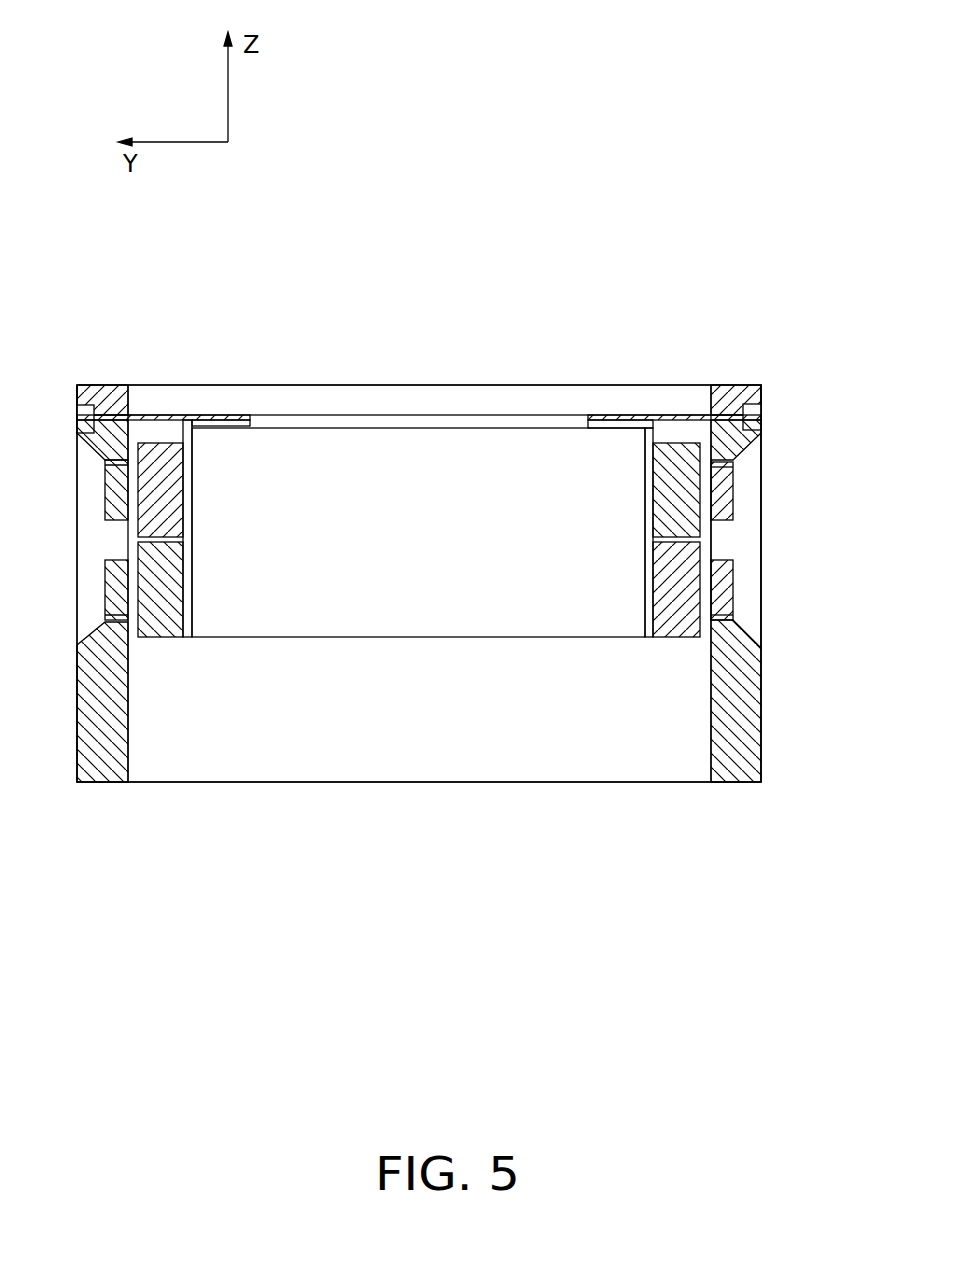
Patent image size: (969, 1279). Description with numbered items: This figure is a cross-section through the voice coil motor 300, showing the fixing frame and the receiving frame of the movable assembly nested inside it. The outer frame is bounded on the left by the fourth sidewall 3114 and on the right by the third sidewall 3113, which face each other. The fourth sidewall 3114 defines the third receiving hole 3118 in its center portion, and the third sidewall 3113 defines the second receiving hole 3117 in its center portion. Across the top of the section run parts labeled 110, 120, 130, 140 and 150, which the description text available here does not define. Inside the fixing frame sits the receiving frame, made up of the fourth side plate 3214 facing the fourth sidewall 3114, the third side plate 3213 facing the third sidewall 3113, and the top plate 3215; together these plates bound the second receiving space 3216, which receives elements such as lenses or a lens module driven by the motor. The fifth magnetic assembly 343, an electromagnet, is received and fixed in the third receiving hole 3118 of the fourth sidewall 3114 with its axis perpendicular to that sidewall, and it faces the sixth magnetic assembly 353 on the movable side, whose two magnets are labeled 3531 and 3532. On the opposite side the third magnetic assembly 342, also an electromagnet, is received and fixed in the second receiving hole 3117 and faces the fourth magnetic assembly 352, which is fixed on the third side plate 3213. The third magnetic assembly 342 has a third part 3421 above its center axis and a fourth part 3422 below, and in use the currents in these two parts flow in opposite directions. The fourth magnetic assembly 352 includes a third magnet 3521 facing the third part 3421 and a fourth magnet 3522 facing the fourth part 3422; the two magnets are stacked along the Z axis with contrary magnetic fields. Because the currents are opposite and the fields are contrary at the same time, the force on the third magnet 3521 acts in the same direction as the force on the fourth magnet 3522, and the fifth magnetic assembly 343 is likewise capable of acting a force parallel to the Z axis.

The voice coil motor 300 is at (385, 233).
The top cover plate 110 is at (232, 418).
The first side block of cover 120 is at (143, 418).
The second side block of cover 130 is at (700, 417).
The first support portion 140 is at (117, 420).
The second support block 150 is at (738, 413).
The third receiving hole 3118 is at (82, 448).
The second receiving hole 3117 is at (747, 615).
The fourth sidewall 3114 is at (90, 725).
The third sidewall 3113 is at (737, 762).
The fourth side plate 3214 is at (175, 430).
The top plate 3215 is at (613, 423).
The third side plate 3213 is at (645, 497).
The second receiving space 3216 is at (435, 583).
The fifth magnetic assembly 343 is at (110, 485).
The third magnetic assembly 342 is at (799, 541).
The third part 3421 is at (723, 506).
The fourth part 3422 is at (725, 592).
The sixth magnetic assembly 353 is at (248, 687).
The first upper magnet 3531 is at (173, 508).
The first lower magnet 3532 is at (163, 615).
The fourth magnetic assembly 352 is at (607, 672).
The third magnet 3521 is at (670, 513).
The fourth magnet 3522 is at (680, 618).